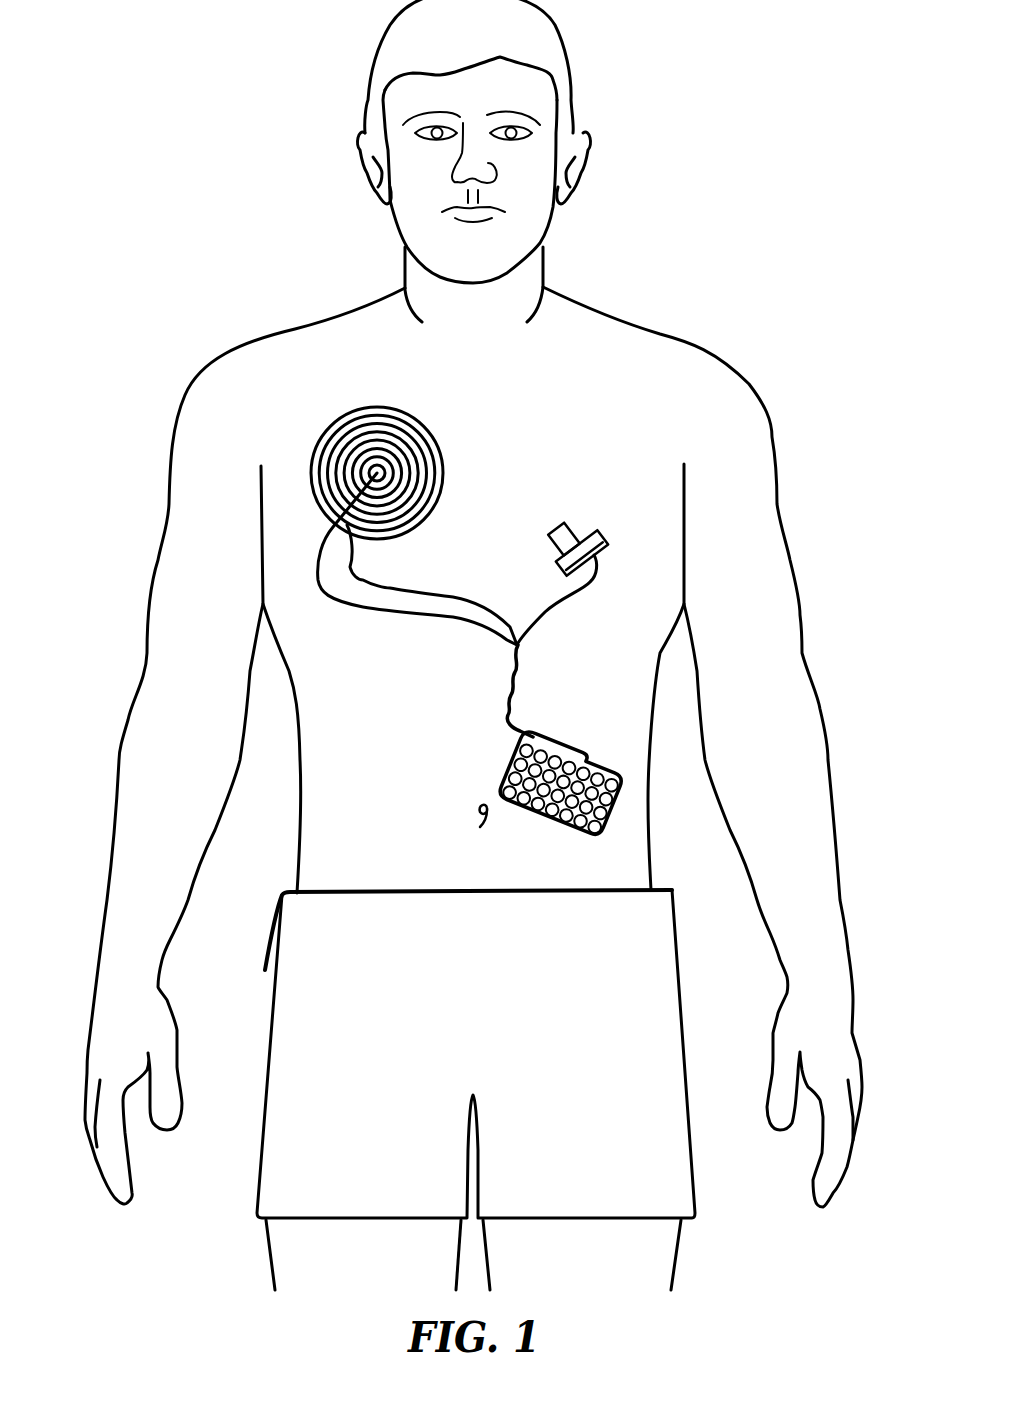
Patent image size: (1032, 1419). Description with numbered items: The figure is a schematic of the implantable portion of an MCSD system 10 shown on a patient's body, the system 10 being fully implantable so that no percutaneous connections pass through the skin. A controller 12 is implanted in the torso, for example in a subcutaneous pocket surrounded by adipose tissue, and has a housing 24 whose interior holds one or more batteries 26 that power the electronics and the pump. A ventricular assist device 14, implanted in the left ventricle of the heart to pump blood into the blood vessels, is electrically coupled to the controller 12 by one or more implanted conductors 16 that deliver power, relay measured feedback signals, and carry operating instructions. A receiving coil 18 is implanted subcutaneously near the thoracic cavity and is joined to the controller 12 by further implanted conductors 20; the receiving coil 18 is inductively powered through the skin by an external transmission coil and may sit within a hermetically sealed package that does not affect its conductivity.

The MCSD system 10 is at (572, 468).
The controller 12 is at (579, 856).
The ventricular assist device 14 is at (600, 530).
The implanted conductors 16 is at (543, 617).
The receiving coil 18 is at (372, 408).
The implanted conductors 20 is at (400, 617).
The housing 24 is at (545, 828).
The batteries 26 is at (627, 793).